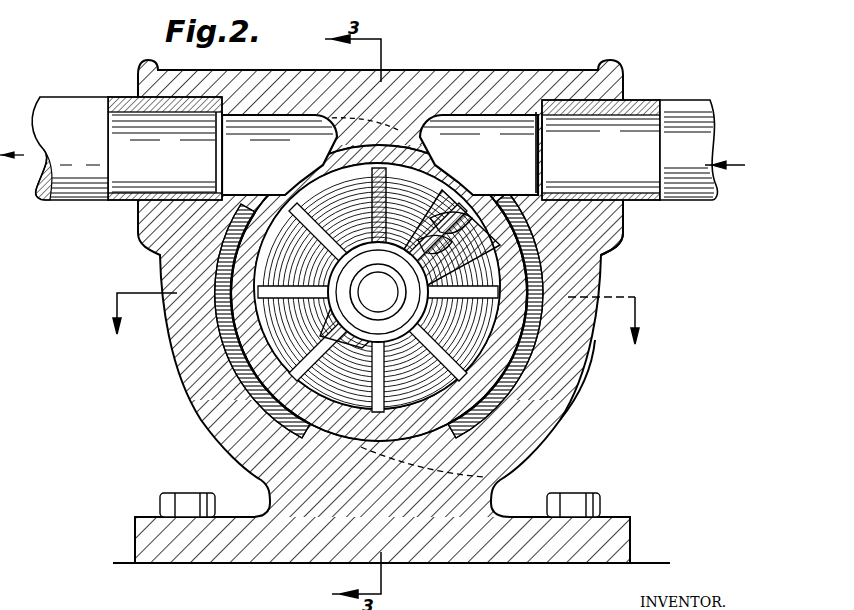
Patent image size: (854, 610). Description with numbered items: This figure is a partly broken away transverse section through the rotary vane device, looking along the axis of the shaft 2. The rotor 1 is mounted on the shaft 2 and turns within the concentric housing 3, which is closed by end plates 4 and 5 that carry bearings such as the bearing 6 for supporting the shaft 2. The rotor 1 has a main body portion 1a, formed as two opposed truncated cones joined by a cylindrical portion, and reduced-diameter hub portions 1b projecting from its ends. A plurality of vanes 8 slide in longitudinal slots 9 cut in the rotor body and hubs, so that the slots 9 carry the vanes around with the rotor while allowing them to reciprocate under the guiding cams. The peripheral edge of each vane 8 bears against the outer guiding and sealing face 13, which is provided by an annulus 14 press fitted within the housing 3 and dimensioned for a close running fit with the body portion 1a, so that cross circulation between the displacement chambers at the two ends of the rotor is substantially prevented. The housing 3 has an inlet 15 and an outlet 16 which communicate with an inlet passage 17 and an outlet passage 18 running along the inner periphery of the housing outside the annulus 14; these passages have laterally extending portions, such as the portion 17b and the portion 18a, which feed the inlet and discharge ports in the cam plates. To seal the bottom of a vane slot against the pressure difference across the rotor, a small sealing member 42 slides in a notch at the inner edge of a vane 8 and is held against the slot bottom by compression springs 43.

The rotor 1 is at (470, 340).
The main body portion 1a is at (275, 330).
The hub portions 1b is at (410, 366).
The shaft 2 is at (378, 292).
The housing 3 is at (218, 412).
The end plate 4 is at (371, 329).
The end plate 5 is at (379, 290).
The bearing 6 is at (343, 331).
The vanes 8 is at (474, 206).
The longitudinal slots 9 is at (362, 292).
The outer guiding and sealing face 13 is at (583, 362).
The annulus 14 is at (600, 262).
The inlet 15 is at (640, 106).
The outlet 16 is at (84, 130).
The inlet passage 17 is at (500, 200).
The laterally projecting portion of inlet passage 17b is at (494, 481).
The outlet passage 18 is at (289, 159).
The laterally projecting portion of discharge passage 18a is at (398, 130).
The sealing member 42 is at (442, 214).
The compression springs 43 is at (421, 250).